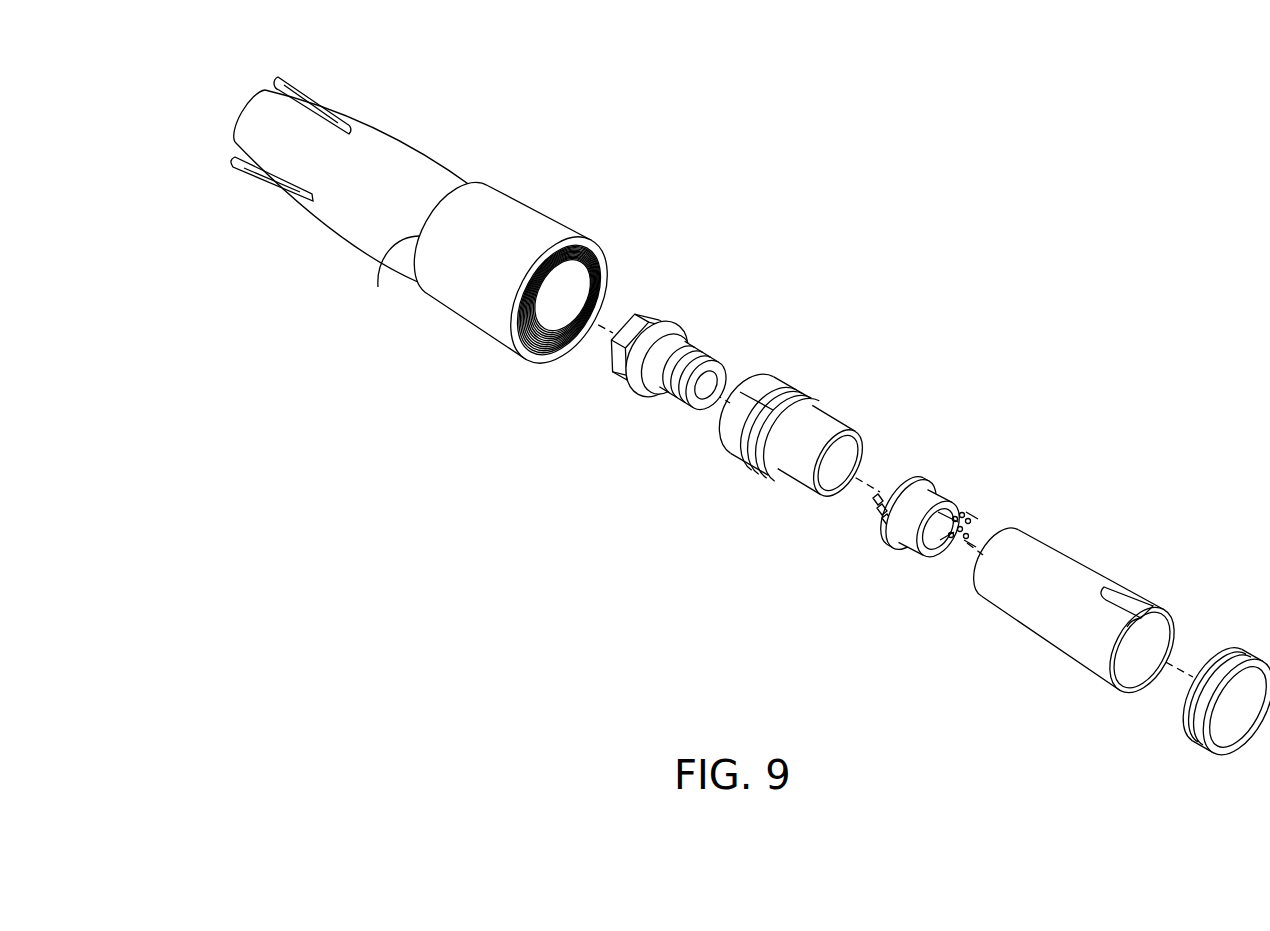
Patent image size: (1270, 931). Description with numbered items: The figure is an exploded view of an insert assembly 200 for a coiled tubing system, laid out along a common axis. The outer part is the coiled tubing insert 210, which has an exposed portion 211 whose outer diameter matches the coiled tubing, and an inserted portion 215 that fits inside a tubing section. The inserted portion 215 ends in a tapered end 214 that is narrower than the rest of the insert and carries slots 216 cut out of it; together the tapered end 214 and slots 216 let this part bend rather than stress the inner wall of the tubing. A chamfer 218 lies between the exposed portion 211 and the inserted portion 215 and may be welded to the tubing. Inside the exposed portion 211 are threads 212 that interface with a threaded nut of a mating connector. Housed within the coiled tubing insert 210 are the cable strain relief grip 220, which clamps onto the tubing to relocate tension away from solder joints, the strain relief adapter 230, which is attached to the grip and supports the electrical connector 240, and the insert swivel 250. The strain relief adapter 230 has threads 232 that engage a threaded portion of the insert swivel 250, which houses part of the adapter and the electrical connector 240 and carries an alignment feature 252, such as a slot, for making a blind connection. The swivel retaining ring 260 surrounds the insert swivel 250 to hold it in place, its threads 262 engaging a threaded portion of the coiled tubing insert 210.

The insert assembly 200 is at (1109, 230).
The coiled tubing insert 210 is at (437, 179).
The exposed portion 211 is at (463, 308).
The threads 212 is at (557, 350).
The tapered end 214 is at (240, 115).
The inserted portion 215 is at (337, 220).
The slots 216 is at (278, 88).
The chamfer 218 is at (378, 283).
The cable strain relief grip 220 is at (652, 397).
The strain relief adapter 230 is at (742, 453).
The threads 232 is at (807, 393).
The electrical connector 240 is at (912, 547).
The insert swivel 250 is at (1042, 630).
The alignment feature 252 is at (1113, 587).
The swivel retaining ring 260 is at (1207, 747).
The threads 262 is at (1227, 650).